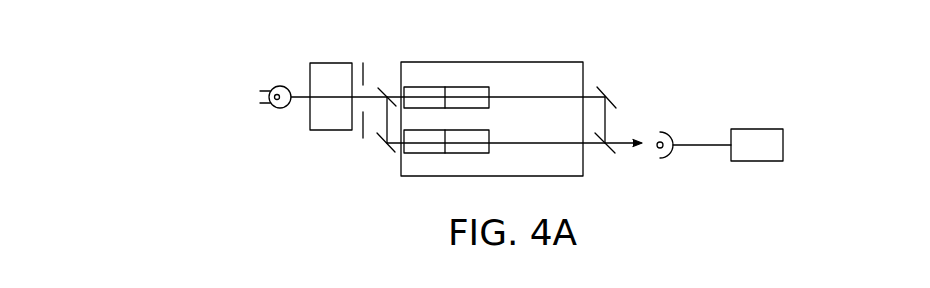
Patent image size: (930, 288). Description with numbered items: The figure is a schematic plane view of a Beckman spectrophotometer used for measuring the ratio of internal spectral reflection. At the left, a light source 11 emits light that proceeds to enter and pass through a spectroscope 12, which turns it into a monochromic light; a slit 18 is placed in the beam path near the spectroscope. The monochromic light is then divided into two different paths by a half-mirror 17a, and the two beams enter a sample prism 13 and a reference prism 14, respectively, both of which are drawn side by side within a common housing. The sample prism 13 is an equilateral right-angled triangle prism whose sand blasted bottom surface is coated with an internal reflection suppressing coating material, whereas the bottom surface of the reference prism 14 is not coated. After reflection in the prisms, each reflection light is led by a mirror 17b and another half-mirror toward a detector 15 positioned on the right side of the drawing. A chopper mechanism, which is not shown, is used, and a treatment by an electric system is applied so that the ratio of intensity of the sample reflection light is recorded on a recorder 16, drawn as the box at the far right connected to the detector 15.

The light source 11 is at (276, 108).
The spectroscope 12 is at (325, 68).
The sample prism 13 is at (472, 154).
The reference prism 14 is at (473, 85).
The detector 15 is at (672, 133).
The recorder 16 is at (772, 132).
The half-mirror 17a is at (381, 83).
The mirror 17b is at (390, 153).
The slit 18 is at (364, 56).